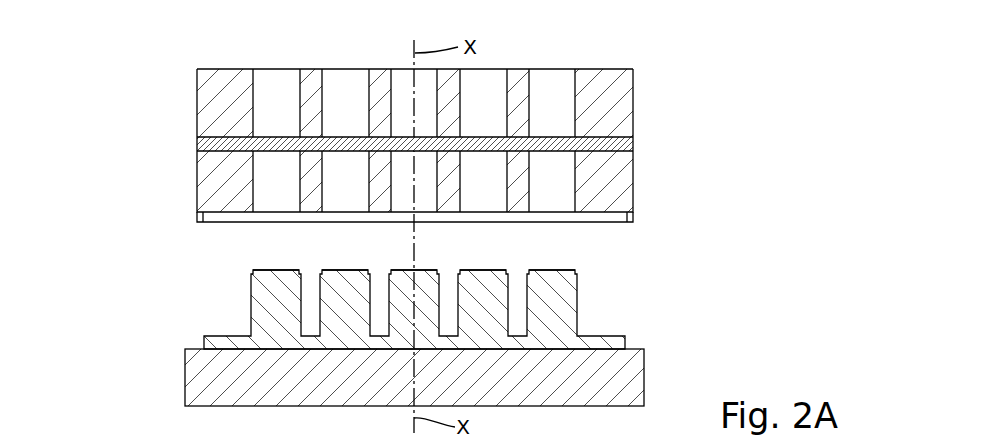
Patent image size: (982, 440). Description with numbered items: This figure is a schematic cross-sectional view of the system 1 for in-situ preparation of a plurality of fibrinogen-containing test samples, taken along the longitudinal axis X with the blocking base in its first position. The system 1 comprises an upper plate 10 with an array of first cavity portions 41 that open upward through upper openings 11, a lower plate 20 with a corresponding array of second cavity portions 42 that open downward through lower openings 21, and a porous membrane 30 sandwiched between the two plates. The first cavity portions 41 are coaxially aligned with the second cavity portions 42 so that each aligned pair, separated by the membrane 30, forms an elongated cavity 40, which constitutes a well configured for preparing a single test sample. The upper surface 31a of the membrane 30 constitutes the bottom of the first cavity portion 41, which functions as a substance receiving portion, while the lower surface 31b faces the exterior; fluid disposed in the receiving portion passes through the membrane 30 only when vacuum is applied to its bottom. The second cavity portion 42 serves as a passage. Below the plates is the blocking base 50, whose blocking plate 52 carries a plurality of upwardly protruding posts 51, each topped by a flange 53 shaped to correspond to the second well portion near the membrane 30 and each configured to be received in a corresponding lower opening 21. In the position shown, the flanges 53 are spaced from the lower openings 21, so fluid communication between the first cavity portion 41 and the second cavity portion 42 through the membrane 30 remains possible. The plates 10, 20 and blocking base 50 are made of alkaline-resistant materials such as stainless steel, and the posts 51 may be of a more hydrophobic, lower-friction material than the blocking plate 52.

The system 1 is at (733, 117).
The upper plate 10 is at (207, 105).
The upper opening 11 is at (561, 70).
The lower plate 20 is at (197, 185).
The lower opening 21 is at (560, 213).
The porous membrane 30 is at (197, 142).
The upper surface of the membrane 31a is at (547, 136).
The lower surface of the membrane 31b is at (272, 151).
The elongated cavity 40 is at (348, 69).
The first cavity portion 41 is at (558, 97).
The second cavity portion 42 is at (552, 174).
The blocking plate 50 is at (351, 330).
The post 51 is at (557, 302).
The blocking plate 52 is at (195, 386).
The flange 53 is at (554, 268).